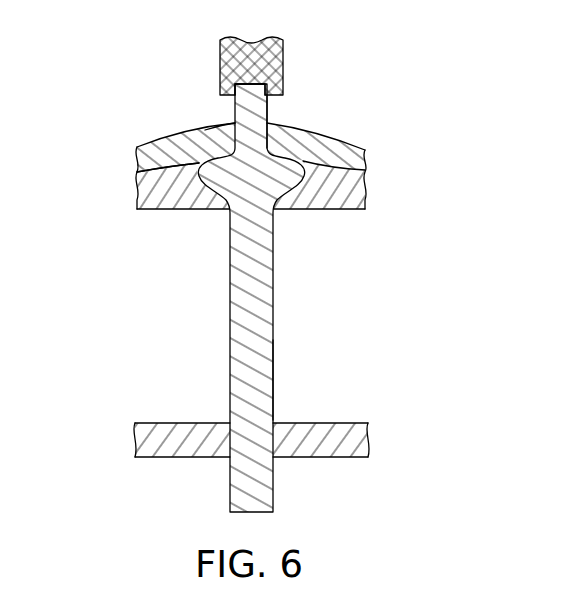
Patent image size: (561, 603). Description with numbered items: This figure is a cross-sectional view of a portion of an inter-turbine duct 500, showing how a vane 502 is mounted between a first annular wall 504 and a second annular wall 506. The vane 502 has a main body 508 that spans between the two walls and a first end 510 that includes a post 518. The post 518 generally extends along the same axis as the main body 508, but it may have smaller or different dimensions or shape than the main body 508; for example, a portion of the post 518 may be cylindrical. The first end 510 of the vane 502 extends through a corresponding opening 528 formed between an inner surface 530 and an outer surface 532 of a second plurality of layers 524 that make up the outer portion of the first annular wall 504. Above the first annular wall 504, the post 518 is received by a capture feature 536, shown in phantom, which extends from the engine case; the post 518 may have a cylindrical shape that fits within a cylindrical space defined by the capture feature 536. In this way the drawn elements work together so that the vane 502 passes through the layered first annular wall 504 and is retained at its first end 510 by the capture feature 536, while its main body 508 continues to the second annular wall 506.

The inter-turbine duct 500 is at (350, 108).
The vane 502 is at (256, 312).
The first annular wall 504 is at (154, 160).
The second annular wall 506 is at (148, 438).
The main body 508 is at (272, 382).
The first end 510 is at (262, 113).
The post 518 is at (245, 92).
The second plurality of layers 524 is at (366, 156).
The opening 528 is at (233, 122).
The inner surface 530 is at (142, 192).
The outer surface 532 is at (173, 147).
The capture feature 536 is at (267, 58).